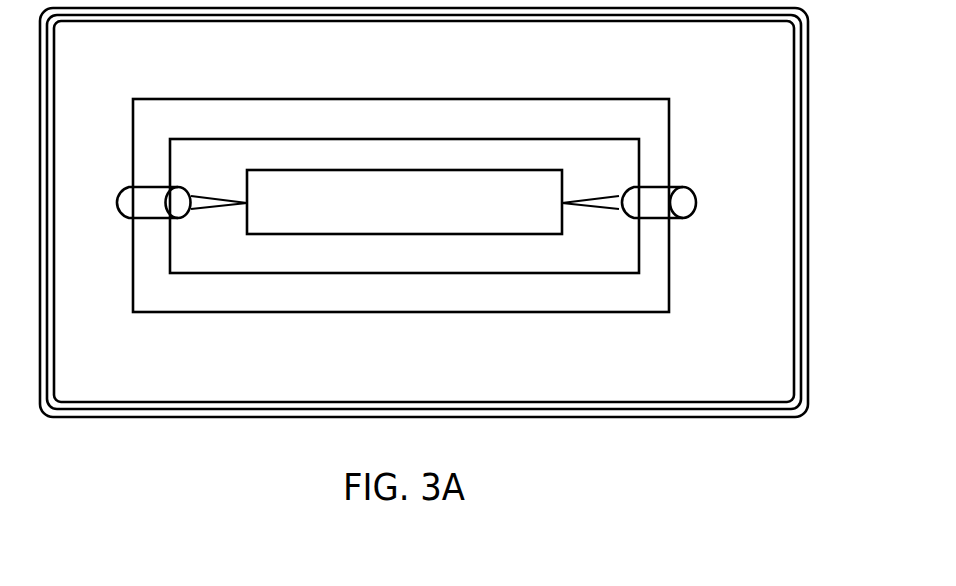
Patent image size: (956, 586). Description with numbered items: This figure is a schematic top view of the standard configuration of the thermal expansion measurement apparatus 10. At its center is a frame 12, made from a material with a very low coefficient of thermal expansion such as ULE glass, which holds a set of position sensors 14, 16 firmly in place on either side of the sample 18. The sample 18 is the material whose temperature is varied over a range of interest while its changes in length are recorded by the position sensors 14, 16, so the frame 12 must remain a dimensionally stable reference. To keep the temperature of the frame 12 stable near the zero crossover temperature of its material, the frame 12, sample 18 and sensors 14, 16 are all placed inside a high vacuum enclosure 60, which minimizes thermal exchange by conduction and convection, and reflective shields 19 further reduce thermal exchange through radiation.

The apparatus 10 is at (686, 82).
The frame 12 is at (244, 298).
The position sensor 14 is at (130, 200).
The position sensor 16 is at (683, 203).
The sample 18 is at (404, 196).
The reflective shield 19 is at (790, 122).
The high vacuum enclosure 60 is at (809, 266).